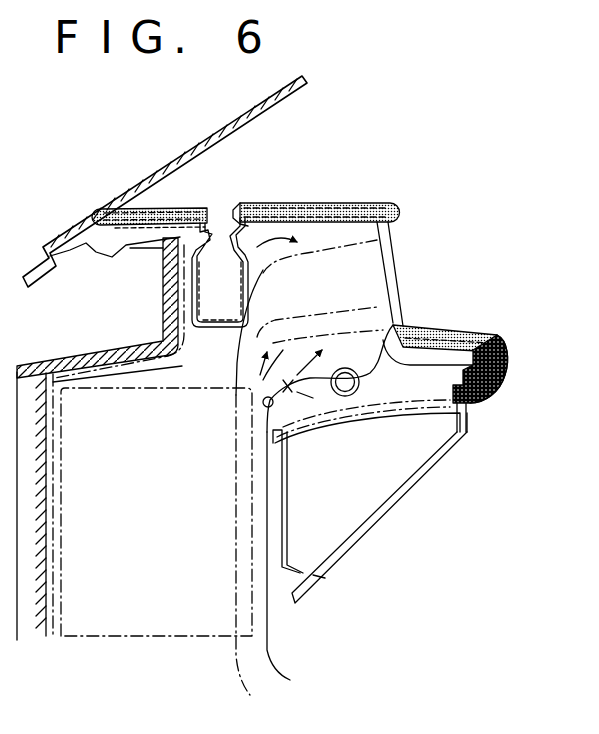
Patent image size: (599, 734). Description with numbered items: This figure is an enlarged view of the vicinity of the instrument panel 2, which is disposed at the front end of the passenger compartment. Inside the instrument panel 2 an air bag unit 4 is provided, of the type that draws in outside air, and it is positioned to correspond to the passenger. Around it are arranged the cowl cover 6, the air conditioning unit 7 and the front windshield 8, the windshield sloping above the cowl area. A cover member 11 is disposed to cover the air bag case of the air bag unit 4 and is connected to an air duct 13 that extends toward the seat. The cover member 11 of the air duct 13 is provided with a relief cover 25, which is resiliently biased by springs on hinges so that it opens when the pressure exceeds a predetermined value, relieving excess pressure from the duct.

The instrument panel 2 is at (330, 193).
The air bag unit 4 is at (360, 278).
The cowl cover 6 is at (203, 212).
The air conditioning unit 7 is at (150, 503).
The front windshield 8 is at (190, 148).
The cover member 11 is at (433, 347).
The air duct 13 is at (272, 648).
The relief cover 25 is at (290, 387).